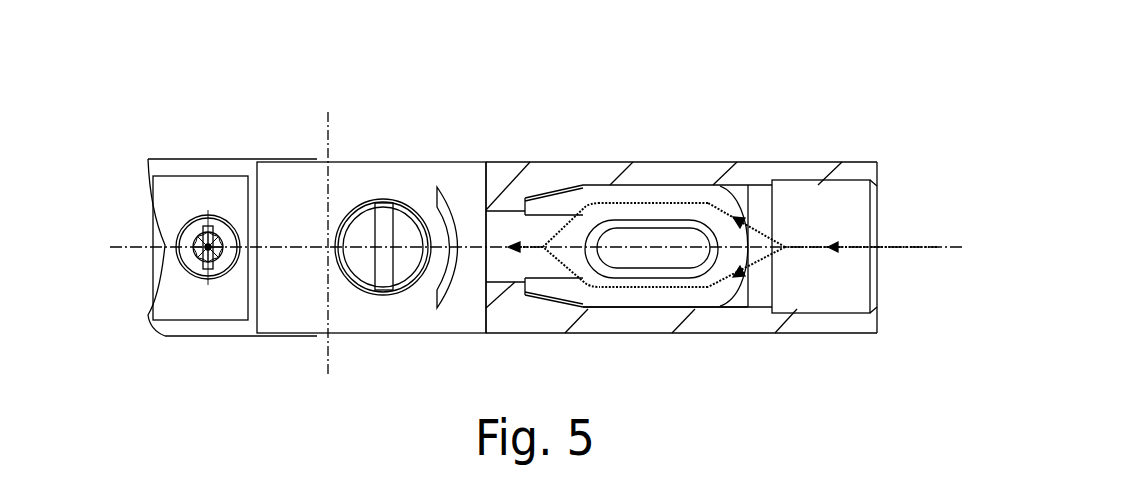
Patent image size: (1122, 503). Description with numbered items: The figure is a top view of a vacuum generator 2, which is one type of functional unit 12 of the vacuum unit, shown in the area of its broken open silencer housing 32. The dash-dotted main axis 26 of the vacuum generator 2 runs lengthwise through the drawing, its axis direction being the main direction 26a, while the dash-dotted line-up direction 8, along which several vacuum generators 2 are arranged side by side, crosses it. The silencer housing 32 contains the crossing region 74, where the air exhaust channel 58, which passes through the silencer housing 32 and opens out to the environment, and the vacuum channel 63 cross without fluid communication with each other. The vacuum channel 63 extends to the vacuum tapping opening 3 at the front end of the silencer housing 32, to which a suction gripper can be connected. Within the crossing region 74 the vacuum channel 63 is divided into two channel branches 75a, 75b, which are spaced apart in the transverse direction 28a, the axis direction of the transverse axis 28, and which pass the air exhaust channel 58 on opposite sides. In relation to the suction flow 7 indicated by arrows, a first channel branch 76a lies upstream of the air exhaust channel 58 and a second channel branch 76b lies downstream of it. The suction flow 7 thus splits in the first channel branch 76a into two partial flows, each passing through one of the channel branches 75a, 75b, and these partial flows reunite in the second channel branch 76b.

The vacuum generator 2 is at (512, 180).
The functional unit 12 is at (270, 140).
The line-up direction 8 is at (360, 227).
The transverse axis 28 is at (360, 227).
The transverse direction 28a is at (362, 98).
The main axis 26 is at (521, 219).
The main direction 26a is at (124, 242).
The silencer housing 32 is at (532, 176).
The vacuum channel 63 is at (577, 190).
The air exhaust channel 58 is at (635, 238).
The channel branch 75b is at (667, 190).
The crossing region 74 is at (702, 177).
The vacuum tapping opening 3 is at (860, 205).
The suction flow 7 is at (889, 249).
The second channel branch 76b is at (545, 265).
The channel branch 75a is at (648, 295).
The first channel branch 76a is at (758, 280).